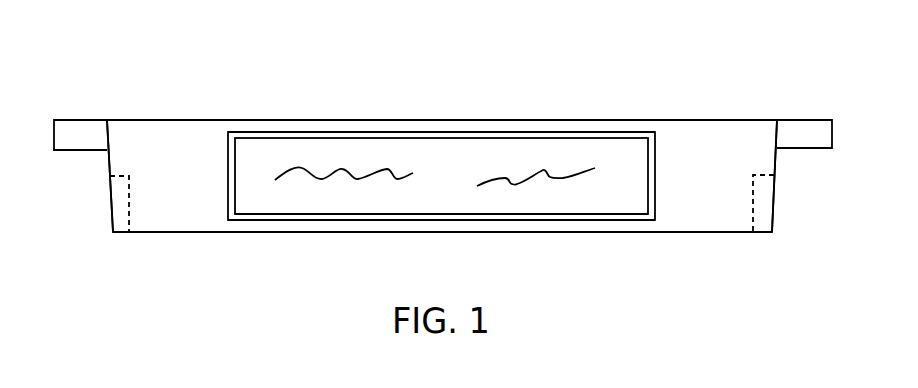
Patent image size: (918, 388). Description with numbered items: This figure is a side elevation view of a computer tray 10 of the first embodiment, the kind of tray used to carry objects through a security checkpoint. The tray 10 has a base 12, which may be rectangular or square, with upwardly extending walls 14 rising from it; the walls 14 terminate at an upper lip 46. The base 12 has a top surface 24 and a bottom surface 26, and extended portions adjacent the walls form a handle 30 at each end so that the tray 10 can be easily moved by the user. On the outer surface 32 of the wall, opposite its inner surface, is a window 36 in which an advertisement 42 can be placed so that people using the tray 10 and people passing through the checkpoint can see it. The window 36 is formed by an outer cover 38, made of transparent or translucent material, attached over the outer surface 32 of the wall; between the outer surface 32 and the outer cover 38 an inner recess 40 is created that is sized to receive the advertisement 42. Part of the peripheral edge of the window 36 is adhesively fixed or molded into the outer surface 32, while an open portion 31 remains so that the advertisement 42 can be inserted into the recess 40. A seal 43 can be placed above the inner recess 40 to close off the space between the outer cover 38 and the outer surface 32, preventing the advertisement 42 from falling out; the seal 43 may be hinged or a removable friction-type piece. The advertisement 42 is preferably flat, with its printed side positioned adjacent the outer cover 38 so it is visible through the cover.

The tray 10 is at (581, 52).
The base 12 is at (532, 225).
The walls 14 is at (110, 165).
The top surface 24 is at (675, 230).
The bottom surface 26 is at (358, 230).
The handle 30 is at (78, 120).
The open portion 31 is at (470, 130).
The outer surface 32 is at (226, 127).
The window 36 is at (601, 115).
The outer cover 38 is at (295, 215).
The inner recess 40 is at (615, 197).
The advertisement 42 is at (331, 150).
The seal 43 is at (385, 133).
The upper lip 46 is at (633, 120).